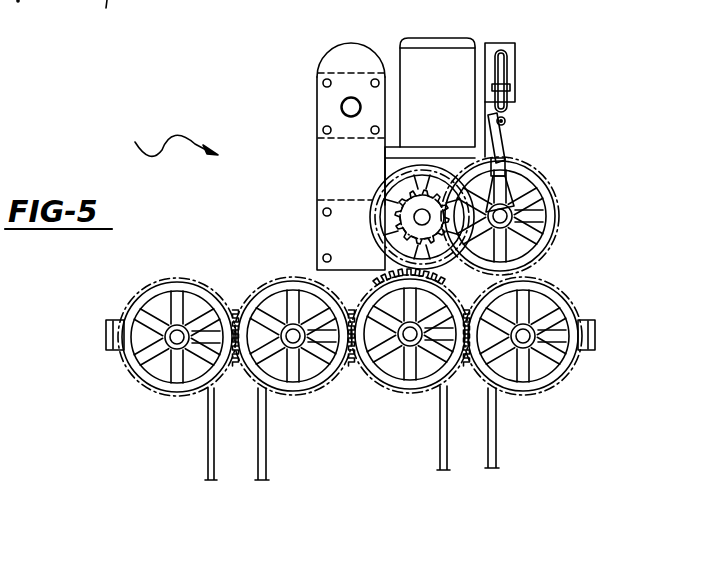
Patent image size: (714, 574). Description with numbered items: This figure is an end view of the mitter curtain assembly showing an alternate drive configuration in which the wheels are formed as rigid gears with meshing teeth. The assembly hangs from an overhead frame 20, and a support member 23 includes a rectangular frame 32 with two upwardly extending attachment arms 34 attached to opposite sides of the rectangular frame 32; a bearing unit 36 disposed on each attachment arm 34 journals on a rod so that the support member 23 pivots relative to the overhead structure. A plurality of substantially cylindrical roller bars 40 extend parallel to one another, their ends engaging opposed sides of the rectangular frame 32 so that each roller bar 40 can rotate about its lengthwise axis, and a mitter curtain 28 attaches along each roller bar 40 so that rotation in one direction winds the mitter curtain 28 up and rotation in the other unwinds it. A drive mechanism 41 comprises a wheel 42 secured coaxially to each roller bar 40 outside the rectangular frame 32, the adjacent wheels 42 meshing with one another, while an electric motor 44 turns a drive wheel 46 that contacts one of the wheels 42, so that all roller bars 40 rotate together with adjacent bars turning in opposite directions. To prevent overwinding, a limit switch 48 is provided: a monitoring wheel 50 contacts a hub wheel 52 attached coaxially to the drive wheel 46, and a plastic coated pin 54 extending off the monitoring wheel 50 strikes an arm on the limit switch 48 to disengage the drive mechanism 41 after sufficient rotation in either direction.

The frame 20 is at (108, 19).
The support member 23 is at (17, 15).
The mitter curtain 28 is at (443, 460).
The rectangular frame 32 is at (115, 320).
The attachment arm 34 is at (328, 163).
The bearing unit 36 is at (325, 104).
The roller bar 40 is at (397, 308).
The drive mechanism 41 is at (163, 141).
The wheel 42 is at (140, 368).
The electric motor 44 is at (410, 66).
The drive wheel 46 is at (388, 252).
The limit switch 48 is at (510, 74).
The monitoring wheel 50 is at (548, 194).
The hub wheel 52 is at (415, 208).
The plastic coated pin 54 is at (505, 147).